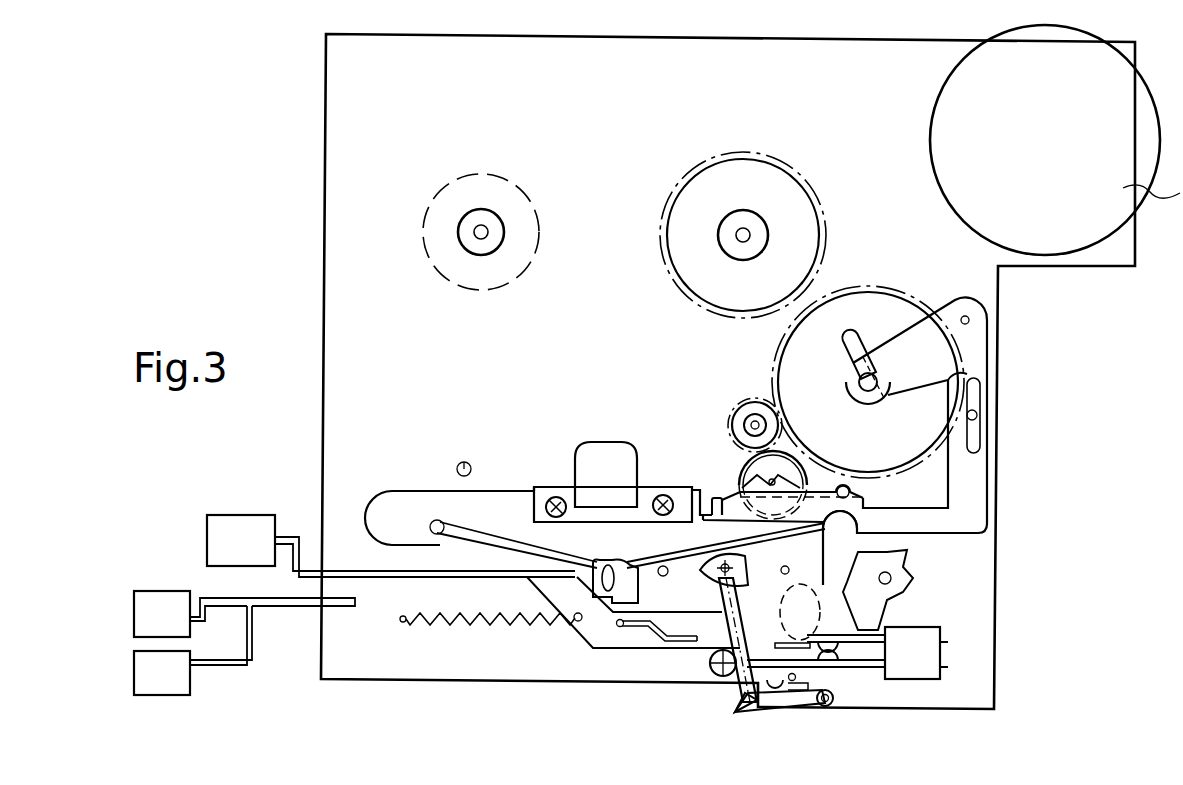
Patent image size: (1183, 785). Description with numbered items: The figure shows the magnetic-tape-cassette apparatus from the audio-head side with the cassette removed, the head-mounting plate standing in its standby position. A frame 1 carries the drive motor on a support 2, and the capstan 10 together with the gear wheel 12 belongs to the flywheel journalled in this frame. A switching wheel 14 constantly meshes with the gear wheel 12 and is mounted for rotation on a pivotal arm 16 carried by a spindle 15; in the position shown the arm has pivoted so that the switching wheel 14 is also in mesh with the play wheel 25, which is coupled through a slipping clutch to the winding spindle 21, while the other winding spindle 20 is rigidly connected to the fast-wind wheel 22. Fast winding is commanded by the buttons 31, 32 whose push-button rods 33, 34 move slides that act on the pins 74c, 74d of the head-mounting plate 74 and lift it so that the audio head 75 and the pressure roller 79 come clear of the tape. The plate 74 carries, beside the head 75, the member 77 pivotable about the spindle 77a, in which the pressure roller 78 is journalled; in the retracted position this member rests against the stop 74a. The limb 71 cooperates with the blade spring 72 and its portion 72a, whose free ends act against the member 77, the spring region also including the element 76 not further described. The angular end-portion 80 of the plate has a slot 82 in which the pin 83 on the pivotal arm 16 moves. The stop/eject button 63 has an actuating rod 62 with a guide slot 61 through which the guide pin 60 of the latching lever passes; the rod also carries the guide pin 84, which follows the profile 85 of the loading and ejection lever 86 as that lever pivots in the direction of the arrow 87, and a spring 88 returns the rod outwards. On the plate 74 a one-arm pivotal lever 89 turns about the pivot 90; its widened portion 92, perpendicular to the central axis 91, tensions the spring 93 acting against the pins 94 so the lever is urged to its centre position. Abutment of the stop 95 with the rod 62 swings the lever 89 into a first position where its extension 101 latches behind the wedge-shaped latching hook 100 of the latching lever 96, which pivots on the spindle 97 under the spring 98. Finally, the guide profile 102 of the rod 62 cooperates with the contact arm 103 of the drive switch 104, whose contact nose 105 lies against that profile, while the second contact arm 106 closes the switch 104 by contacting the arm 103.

The frame 1 is at (362, 163).
The support 2 is at (1110, 258).
The capstan 10 is at (755, 420).
The gear wheel 12 is at (730, 405).
The switching wheel 14 is at (893, 296).
The spindle 15 is at (966, 316).
The pivotal arm 16 is at (942, 305).
The winding spindle 20 is at (483, 230).
The winding spindle 21 is at (750, 233).
The fast-wind wheel 22 is at (432, 270).
The play wheel 25 is at (822, 258).
The button 31 is at (132, 672).
The button 32 is at (132, 615).
The push-button rod 33 is at (245, 668).
The push-button rod 34 is at (240, 608).
The guide pin 60 is at (623, 635).
The guide slot 61 is at (668, 645).
The actuating rod 62 is at (360, 565).
The stop/eject button 63 is at (245, 530).
The limb 71 is at (605, 560).
The blade spring 72 is at (500, 540).
The portion of the blade spring 72a is at (594, 603).
The head-mounting plate 74 is at (514, 495).
The stop 74a is at (716, 497).
The pin 74c is at (556, 497).
The pin 74d is at (663, 495).
The audio head 75 is at (612, 462).
The pivot pin 76 is at (435, 520).
The member 77 is at (735, 517).
The spindle 77a is at (845, 486).
The pressure roller 78 is at (464, 462).
The pressure roller 79 is at (740, 470).
The angular end-portion 80 is at (996, 470).
The slot 82 is at (988, 396).
The pin 83 is at (977, 416).
The guide pin 84 is at (895, 585).
The profile 85 is at (872, 620).
The loading and ejection lever 86 is at (908, 565).
The arrow 87 is at (877, 540).
The spring 88 is at (480, 625).
The one-arm pivotal lever 89 is at (714, 602).
The pivot 90 is at (733, 560).
The central axis 91 is at (733, 640).
The widened portion 92 is at (742, 578).
The spring 93 is at (787, 566).
The pins 94 is at (661, 566).
The stop 95 is at (790, 642).
The latching lever 96 is at (792, 703).
The spindle 97 is at (832, 702).
The spring 98 is at (815, 706).
The latching hook 100 is at (740, 714).
The extension 101 is at (815, 677).
The guide profile 102 is at (803, 612).
The contact arm 103 is at (848, 672).
The drive switch 104 is at (925, 665).
The contact nose 105 is at (718, 675).
The second contact arm 106 is at (847, 649).